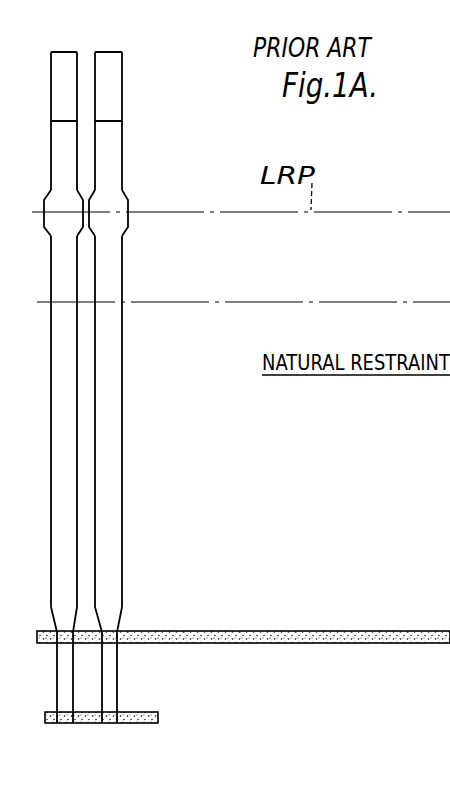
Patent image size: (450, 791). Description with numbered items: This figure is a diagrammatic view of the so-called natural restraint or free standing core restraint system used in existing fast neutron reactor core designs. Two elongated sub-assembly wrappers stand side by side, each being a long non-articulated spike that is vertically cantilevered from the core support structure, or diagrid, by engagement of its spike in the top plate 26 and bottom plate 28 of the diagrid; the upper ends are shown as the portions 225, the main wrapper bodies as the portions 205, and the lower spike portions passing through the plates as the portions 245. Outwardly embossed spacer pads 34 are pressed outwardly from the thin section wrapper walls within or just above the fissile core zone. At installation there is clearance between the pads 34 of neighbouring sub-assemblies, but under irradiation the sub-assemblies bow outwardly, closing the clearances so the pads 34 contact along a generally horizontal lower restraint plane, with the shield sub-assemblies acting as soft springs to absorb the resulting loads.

The upper tube section 225 is at (70, 98).
The outwardly embossed spacer pads 34 is at (86, 212).
The tube (guide thimble) 205 is at (70, 462).
The top plate of the diagrid 26 is at (288, 631).
The lower tube section 245 is at (70, 693).
The bottom plate of the diagrid 28 is at (153, 710).